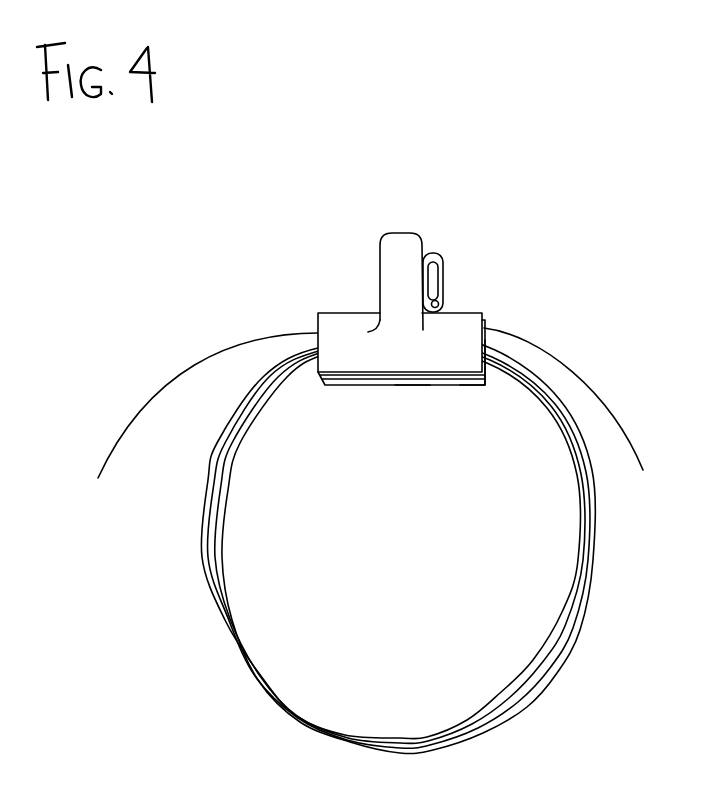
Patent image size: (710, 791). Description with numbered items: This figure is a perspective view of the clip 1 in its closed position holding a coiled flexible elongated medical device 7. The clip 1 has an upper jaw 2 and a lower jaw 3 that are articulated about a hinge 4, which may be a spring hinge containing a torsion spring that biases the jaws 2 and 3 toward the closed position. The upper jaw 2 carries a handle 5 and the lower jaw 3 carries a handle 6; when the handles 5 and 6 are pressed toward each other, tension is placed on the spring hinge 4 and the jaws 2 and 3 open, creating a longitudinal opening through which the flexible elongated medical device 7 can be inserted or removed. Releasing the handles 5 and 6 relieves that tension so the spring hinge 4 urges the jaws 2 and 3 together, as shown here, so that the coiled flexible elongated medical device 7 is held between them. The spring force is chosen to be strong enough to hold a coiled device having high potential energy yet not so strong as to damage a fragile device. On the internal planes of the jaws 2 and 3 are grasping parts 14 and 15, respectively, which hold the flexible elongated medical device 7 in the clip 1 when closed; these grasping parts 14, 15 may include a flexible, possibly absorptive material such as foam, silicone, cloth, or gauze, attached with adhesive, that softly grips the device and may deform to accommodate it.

The clip 1 is at (315, 200).
The upper jaw 2 is at (348, 328).
The lower jaw 3 is at (342, 385).
The hinge 4 is at (438, 302).
The handle 5 is at (393, 247).
The handle 6 is at (433, 265).
The flexible elongated medical device 7 is at (593, 558).
The grasping part 14 is at (475, 387).
The grasping part 15 is at (413, 387).